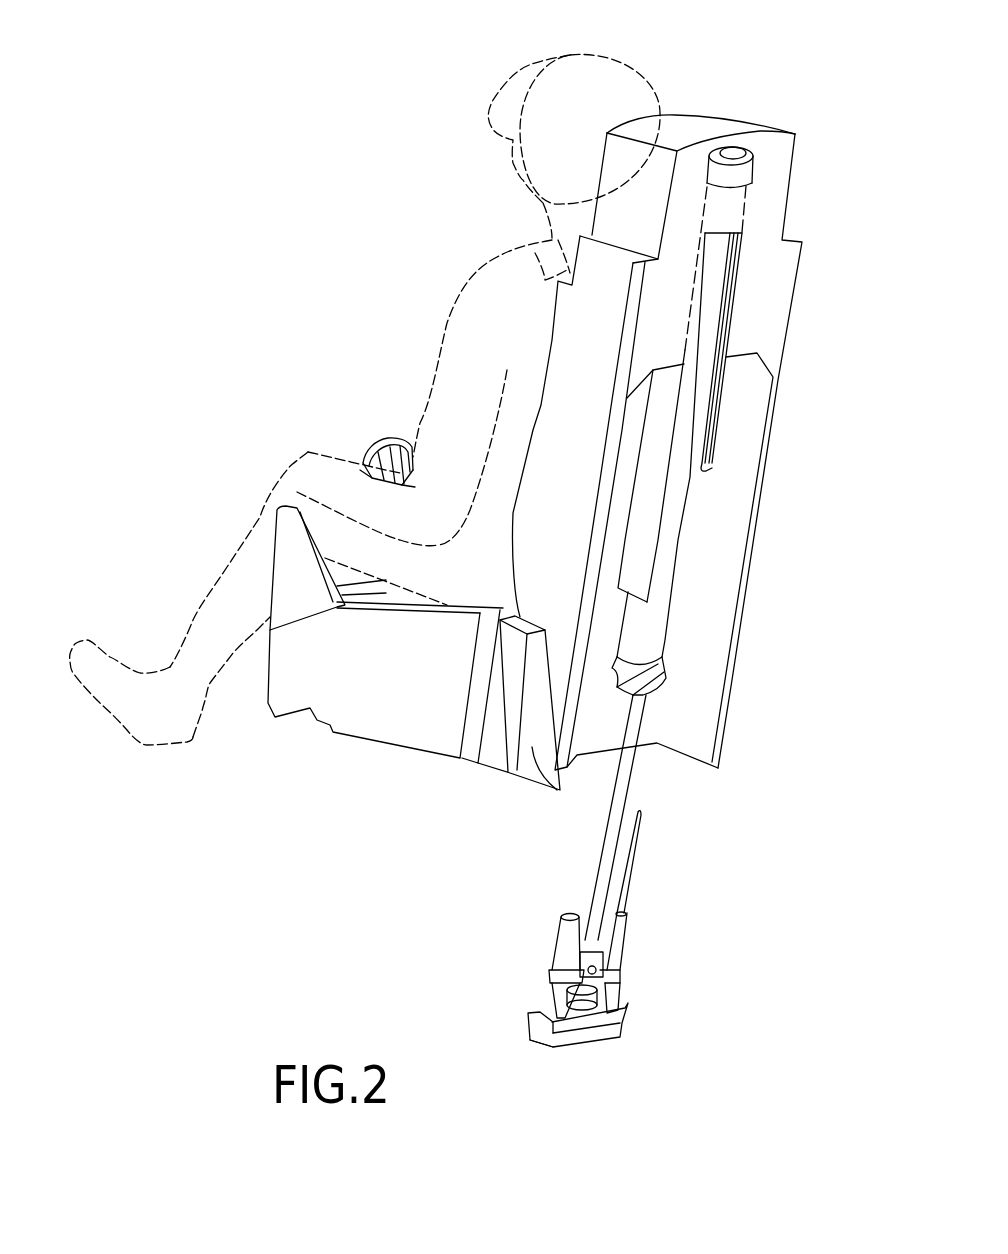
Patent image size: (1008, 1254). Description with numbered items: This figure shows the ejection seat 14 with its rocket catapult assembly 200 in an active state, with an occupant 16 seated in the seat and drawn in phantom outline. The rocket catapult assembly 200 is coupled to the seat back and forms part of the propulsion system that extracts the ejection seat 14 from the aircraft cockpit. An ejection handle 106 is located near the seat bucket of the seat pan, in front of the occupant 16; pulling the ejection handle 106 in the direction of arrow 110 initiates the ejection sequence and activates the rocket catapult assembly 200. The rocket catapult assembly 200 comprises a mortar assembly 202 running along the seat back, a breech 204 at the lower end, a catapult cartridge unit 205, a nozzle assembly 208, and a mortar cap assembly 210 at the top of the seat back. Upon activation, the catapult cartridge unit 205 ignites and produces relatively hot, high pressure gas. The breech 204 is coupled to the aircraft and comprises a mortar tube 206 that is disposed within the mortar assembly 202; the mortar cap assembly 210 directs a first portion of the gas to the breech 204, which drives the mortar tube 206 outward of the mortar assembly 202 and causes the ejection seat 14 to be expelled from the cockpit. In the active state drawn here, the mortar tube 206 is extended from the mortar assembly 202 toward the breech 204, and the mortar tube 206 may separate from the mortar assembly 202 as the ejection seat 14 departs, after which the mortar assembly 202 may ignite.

The ejection seat 14 is at (757, 103).
The occupant 16 is at (660, 72).
The ejection handle 106 is at (348, 440).
The arrow 110 is at (388, 427).
The rocket catapult assembly 200 is at (797, 397).
The mortar assembly 202 is at (712, 302).
The breech 204 is at (625, 975).
The catapult cartridge unit 205 is at (548, 968).
The mortar tube 206 is at (608, 868).
The nozzle assembly 208 is at (668, 662).
The mortar cap assembly 210 is at (748, 156).